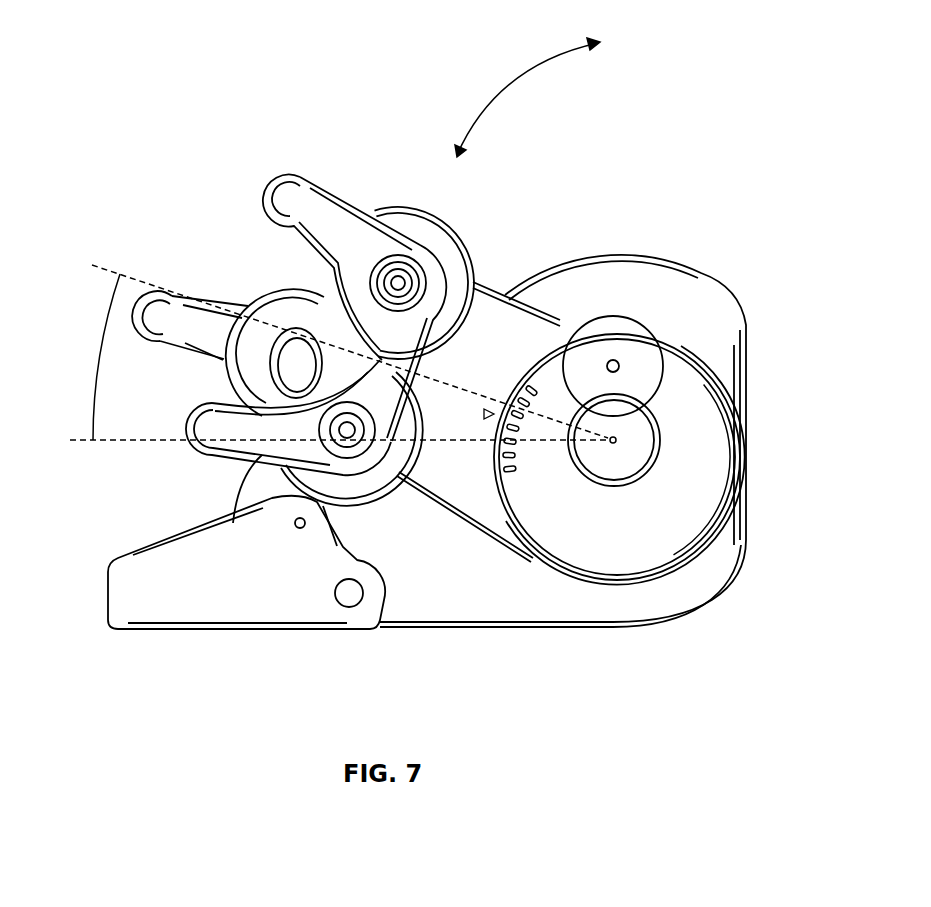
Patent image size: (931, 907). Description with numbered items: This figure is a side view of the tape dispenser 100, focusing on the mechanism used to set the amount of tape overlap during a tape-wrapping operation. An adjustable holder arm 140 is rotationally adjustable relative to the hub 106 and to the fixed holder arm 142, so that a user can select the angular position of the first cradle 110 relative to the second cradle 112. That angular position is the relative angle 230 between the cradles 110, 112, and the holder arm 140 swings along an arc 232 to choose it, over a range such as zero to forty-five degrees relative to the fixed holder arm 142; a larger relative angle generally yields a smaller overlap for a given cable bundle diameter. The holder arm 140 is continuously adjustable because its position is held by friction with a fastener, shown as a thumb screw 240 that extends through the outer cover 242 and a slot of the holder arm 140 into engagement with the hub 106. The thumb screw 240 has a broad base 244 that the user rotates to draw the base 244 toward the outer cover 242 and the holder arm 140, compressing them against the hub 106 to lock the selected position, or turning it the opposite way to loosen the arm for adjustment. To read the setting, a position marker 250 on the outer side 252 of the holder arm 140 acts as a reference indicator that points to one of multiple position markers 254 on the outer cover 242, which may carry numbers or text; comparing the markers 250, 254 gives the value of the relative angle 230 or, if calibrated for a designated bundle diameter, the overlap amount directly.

The tape dispenser 100 is at (640, 140).
The hub 106 is at (623, 455).
The first cradle 110 is at (363, 195).
The second cradle 112 is at (253, 290).
The adjustable holder arm 140 is at (523, 330).
The fixed holder arm 142 is at (448, 583).
The relative angle 230 is at (98, 358).
The arc 232 is at (512, 82).
The thumb screw 240 is at (633, 332).
The outer cover 242 is at (705, 467).
The broad base 244 is at (663, 362).
The position marker 250 is at (487, 416).
The outer side 252 is at (443, 473).
The position markers 254 is at (510, 472).